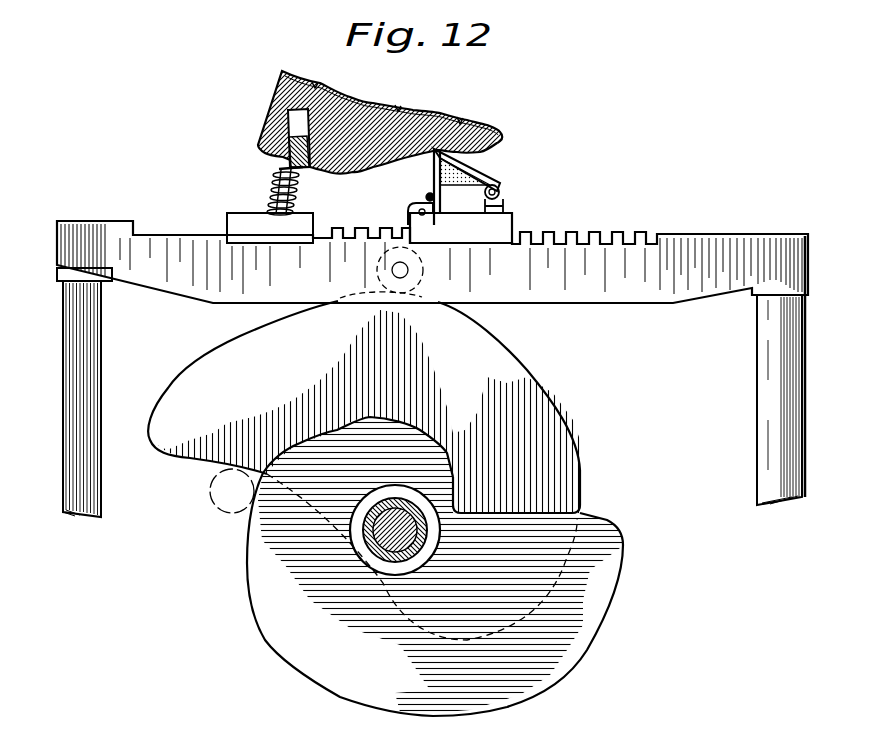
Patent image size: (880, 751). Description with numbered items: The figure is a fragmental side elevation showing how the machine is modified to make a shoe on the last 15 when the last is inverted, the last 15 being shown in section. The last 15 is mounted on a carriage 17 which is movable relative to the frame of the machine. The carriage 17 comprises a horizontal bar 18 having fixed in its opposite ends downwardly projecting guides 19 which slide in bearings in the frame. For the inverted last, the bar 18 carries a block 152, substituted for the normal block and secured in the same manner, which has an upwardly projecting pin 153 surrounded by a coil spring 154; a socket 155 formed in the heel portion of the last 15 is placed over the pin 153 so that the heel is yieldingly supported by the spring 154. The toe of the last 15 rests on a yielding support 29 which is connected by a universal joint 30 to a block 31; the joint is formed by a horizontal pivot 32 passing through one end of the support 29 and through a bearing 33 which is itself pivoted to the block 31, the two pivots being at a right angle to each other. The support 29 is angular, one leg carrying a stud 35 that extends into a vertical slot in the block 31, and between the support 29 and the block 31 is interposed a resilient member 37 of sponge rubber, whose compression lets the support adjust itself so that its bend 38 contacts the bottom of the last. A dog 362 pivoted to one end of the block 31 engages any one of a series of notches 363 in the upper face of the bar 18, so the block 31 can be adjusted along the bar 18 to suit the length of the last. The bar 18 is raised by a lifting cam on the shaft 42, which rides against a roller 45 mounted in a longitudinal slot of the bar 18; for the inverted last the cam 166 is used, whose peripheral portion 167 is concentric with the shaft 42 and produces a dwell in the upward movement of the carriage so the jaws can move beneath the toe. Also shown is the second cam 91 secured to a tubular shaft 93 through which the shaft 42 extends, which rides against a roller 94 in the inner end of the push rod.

The last 15 is at (397, 108).
The carriage 17 is at (682, 233).
The horizontal bar 18 is at (667, 293).
The downwardly projecting guides 19 is at (100, 365).
The yielding support 29 is at (488, 172).
The universal joint 30 is at (513, 181).
The block 31 is at (461, 228).
The horizontal pivot 32 is at (500, 188).
The bearing 33 is at (500, 205).
The stud 35 is at (429, 196).
The resilient member 37 is at (440, 168).
The bend 38 is at (457, 127).
The shaft 42 is at (363, 530).
The roller 45 is at (422, 270).
The second cam 91 is at (268, 602).
The tubular shaft 93 is at (380, 557).
The roller 94 is at (208, 490).
The block 152 is at (252, 222).
The upwardly projecting pin 153 is at (290, 145).
The coil spring 154 is at (277, 167).
The socket 155 is at (290, 108).
The cam 166 is at (517, 367).
The portion 167 is at (276, 319).
The dog 362 is at (410, 208).
The notches 363 is at (618, 232).